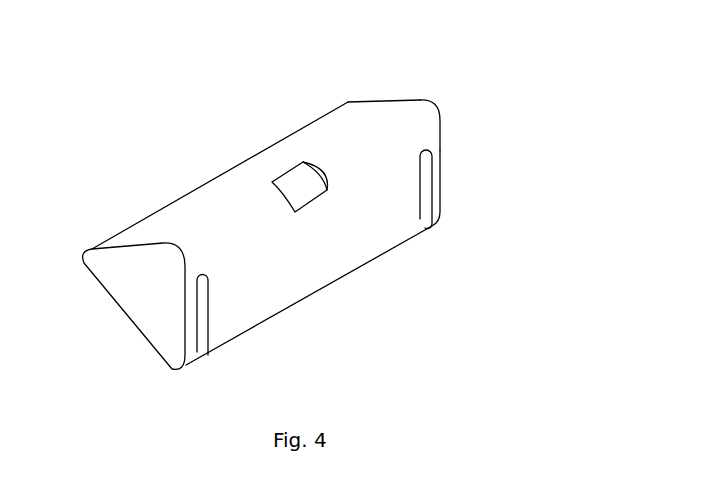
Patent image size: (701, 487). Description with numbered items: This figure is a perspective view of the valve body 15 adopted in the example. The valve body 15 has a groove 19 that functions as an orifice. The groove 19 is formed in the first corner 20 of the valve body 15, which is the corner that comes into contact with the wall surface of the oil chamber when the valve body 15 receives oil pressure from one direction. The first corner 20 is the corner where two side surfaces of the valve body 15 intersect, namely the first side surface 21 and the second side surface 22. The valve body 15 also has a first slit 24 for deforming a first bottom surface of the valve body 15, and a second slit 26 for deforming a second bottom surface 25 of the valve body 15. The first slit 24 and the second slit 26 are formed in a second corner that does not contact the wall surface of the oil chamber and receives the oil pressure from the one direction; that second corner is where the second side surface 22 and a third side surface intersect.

The valve body 15 is at (148, 218).
The groove 19 is at (297, 183).
The first corner 20 is at (423, 108).
The first side surface 21 is at (358, 112).
The second side surface 22 is at (357, 243).
The first slit 24 is at (423, 200).
The second bottom surface 25 is at (137, 307).
The second slit 26 is at (202, 327).